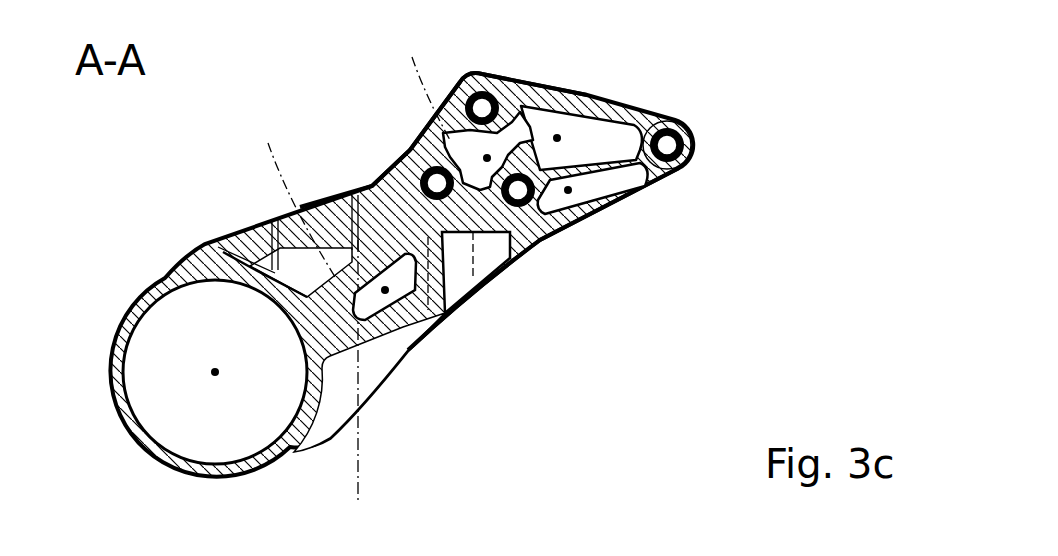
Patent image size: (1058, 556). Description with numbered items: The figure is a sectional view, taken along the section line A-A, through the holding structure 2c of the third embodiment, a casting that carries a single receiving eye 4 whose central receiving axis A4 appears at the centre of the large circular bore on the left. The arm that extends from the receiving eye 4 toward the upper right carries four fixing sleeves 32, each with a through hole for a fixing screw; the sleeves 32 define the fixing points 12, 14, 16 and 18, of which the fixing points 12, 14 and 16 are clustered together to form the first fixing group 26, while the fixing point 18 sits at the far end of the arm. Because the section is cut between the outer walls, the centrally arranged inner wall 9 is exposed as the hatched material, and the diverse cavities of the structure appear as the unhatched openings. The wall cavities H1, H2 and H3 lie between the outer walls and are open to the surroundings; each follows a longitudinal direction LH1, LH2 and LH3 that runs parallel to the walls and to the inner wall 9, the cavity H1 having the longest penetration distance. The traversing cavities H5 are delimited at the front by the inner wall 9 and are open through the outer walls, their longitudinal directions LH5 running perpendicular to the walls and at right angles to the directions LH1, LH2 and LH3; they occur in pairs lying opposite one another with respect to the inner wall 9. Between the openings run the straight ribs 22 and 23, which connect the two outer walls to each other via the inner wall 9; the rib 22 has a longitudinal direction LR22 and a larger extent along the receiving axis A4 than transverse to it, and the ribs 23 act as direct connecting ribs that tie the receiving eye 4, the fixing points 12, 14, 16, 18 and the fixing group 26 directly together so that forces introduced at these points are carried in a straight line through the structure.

The holding structure 2c is at (208, 243).
The receiving eye 4 is at (173, 443).
The inner wall 9 is at (596, 144).
The fixing point 12 is at (370, 185).
The fixing point 14 is at (470, 82).
The fixing point 16 is at (608, 198).
The fixing point 18 is at (684, 128).
The rib 22 is at (442, 257).
The direct connecting rib 23 is at (612, 122).
The first fixing group 26 is at (509, 147).
The fixing sleeve 32 is at (477, 92).
The receiving axis A4 is at (215, 372).
The wall cavity H1 is at (442, 287).
The longitudinal direction of cavity H1 LH1 is at (477, 290).
The wall cavity H2 is at (378, 340).
The longitudinal direction of cavity H2 LH2 is at (350, 426).
The wall cavity H3 is at (273, 190).
The longitudinal direction of cavity H3 LH3 is at (283, 233).
The traversing cavity H5 is at (733, 212).
The longitudinal direction of cavity H5 LH5 is at (672, 180).
The longitudinal direction of rib 22 LR22 is at (427, 337).